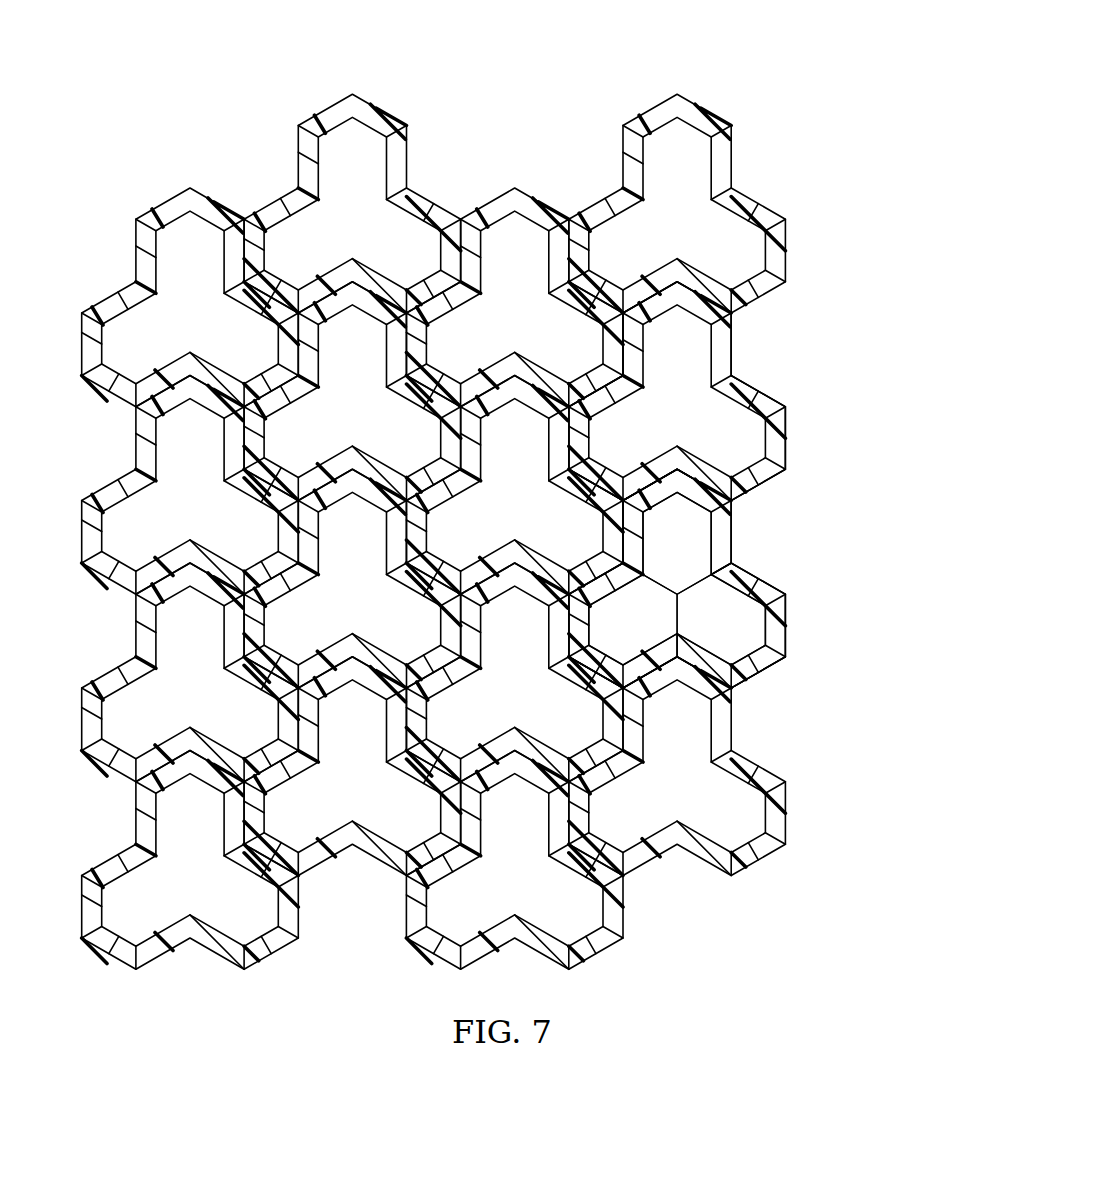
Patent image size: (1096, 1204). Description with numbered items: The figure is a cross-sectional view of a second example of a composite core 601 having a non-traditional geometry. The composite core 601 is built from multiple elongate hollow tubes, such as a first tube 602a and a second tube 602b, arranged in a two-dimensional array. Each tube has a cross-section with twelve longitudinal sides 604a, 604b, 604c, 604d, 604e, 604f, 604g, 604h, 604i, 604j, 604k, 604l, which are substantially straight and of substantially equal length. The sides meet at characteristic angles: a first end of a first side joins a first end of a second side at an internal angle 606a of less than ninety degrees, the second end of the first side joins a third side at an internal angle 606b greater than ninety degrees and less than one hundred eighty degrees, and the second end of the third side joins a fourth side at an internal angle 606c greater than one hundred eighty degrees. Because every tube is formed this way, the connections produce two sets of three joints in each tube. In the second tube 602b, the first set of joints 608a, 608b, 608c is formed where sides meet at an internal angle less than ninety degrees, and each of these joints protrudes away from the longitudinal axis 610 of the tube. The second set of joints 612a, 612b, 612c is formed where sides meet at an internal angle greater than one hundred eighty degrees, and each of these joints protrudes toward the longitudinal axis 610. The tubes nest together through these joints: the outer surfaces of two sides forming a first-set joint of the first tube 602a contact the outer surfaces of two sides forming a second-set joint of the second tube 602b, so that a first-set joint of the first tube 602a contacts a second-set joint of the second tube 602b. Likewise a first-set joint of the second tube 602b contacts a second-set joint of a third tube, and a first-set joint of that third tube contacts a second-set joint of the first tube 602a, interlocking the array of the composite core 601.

The composite core 601 is at (742, 84).
The first tube 602a is at (762, 389).
The second tube 602b is at (792, 613).
The side 604a is at (778, 400).
The side 604b is at (738, 356).
The side 604c is at (714, 300).
The side 604d is at (660, 289).
The side 604e is at (620, 345).
The side 604f is at (590, 392).
The side 604g is at (556, 432).
The side 604h is at (586, 480).
The side 604i is at (660, 478).
The side 604j is at (740, 504).
The side 604k is at (790, 478).
The side 604l is at (790, 420).
The internal angle 606a is at (602, 640).
The internal angle 606b is at (772, 635).
The internal angle 606c is at (706, 500).
The joint 608a is at (582, 680).
The joint 608b is at (742, 680).
The joint 608c is at (690, 480).
The longitudinal axis 610 is at (700, 540).
The joint 612a is at (690, 650).
The joint 612b is at (732, 557).
The joint 612c is at (606, 590).